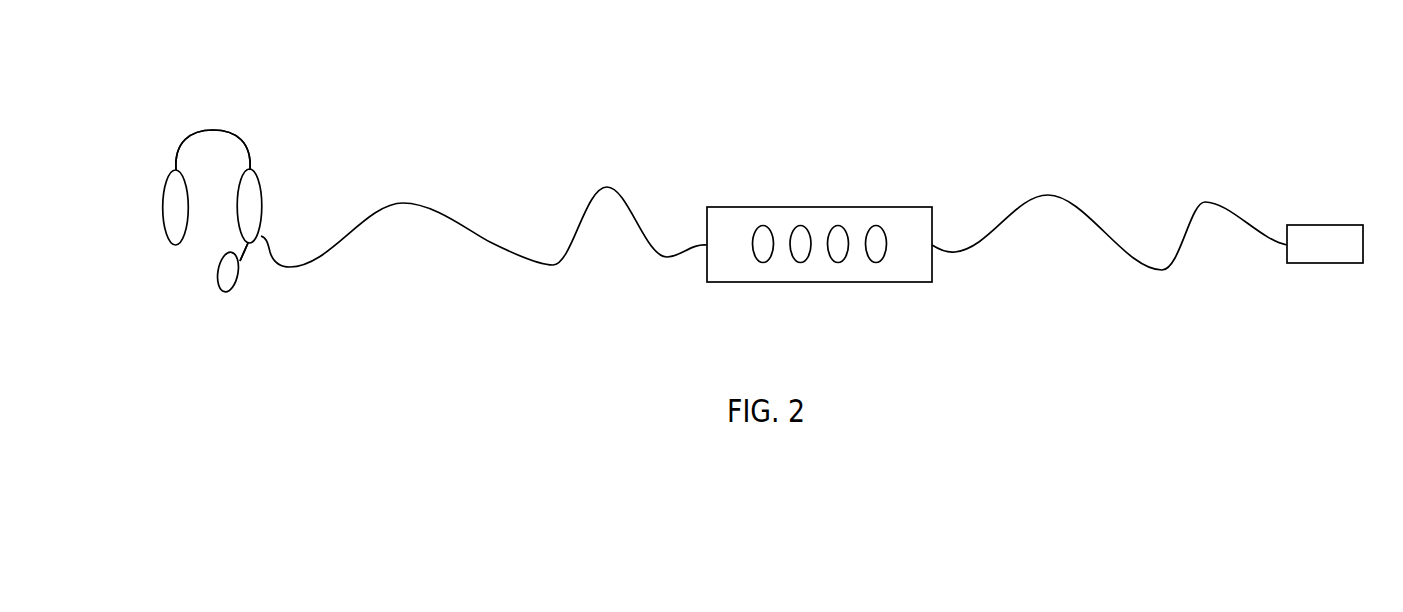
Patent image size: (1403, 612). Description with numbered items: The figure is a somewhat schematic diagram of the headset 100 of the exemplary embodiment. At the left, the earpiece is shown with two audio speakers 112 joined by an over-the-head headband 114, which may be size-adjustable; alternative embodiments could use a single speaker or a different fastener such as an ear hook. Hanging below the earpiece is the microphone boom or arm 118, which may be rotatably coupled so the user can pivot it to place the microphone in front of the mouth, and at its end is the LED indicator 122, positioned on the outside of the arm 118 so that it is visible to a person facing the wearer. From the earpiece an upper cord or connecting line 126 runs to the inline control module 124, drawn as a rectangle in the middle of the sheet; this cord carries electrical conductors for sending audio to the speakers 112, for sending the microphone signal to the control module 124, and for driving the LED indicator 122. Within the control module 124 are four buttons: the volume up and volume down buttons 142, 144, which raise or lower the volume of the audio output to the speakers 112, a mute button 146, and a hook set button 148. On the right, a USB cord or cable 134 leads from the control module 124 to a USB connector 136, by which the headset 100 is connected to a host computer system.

The headset 100 is at (237, 122).
The audio speakers 112 is at (262, 198).
The headband 114 is at (181, 144).
The microphone boom or arm 118 is at (243, 260).
The LED indicator 122 is at (219, 282).
The inline control module 124 is at (771, 285).
The upper cord or connecting line 126 is at (487, 240).
The USB cord or cable 134 is at (1115, 240).
The USB connector 136 is at (1325, 263).
The volume up button 142 is at (800, 226).
The volume down button 144 is at (838, 226).
The mute button 146 is at (876, 226).
The hook set button 148 is at (763, 226).